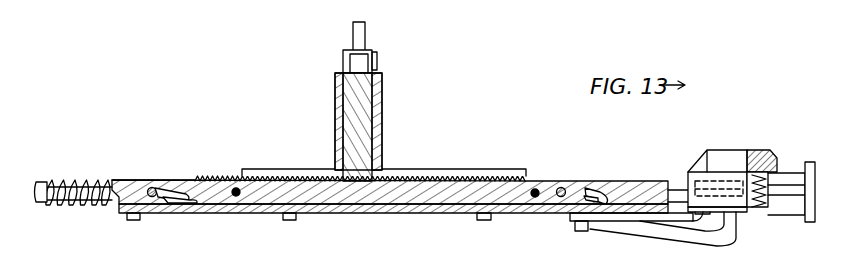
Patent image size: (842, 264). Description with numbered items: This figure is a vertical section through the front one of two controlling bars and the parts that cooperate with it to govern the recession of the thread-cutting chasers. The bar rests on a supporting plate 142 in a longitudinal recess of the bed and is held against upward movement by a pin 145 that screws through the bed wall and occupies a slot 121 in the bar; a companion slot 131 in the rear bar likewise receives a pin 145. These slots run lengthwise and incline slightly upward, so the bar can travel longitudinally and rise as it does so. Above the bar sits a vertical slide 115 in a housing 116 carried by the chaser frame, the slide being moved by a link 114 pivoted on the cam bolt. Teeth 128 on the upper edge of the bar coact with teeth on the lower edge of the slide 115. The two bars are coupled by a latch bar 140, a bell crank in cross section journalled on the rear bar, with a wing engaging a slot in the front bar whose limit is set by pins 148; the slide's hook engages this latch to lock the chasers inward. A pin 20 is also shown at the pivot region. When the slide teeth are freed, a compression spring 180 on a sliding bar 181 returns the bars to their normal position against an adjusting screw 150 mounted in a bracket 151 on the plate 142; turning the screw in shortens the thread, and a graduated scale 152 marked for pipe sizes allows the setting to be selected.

The pivot pin 20 is at (586, 182).
The link 114 is at (366, 33).
The vertical slide 115 is at (363, 137).
The housing 116 is at (378, 92).
The slot 121 is at (173, 186).
The teeth 128 is at (420, 180).
The slot 131 is at (175, 206).
The latch bar 140 is at (485, 160).
The supporting plate 142 is at (542, 213).
The pin 145 is at (154, 188).
The pin 148 is at (240, 186).
The adjusting screw 150 is at (757, 209).
The bracket 151 is at (719, 245).
The graduated scale 152 is at (773, 153).
The compression spring 180 is at (88, 170).
The bar 181 is at (43, 184).